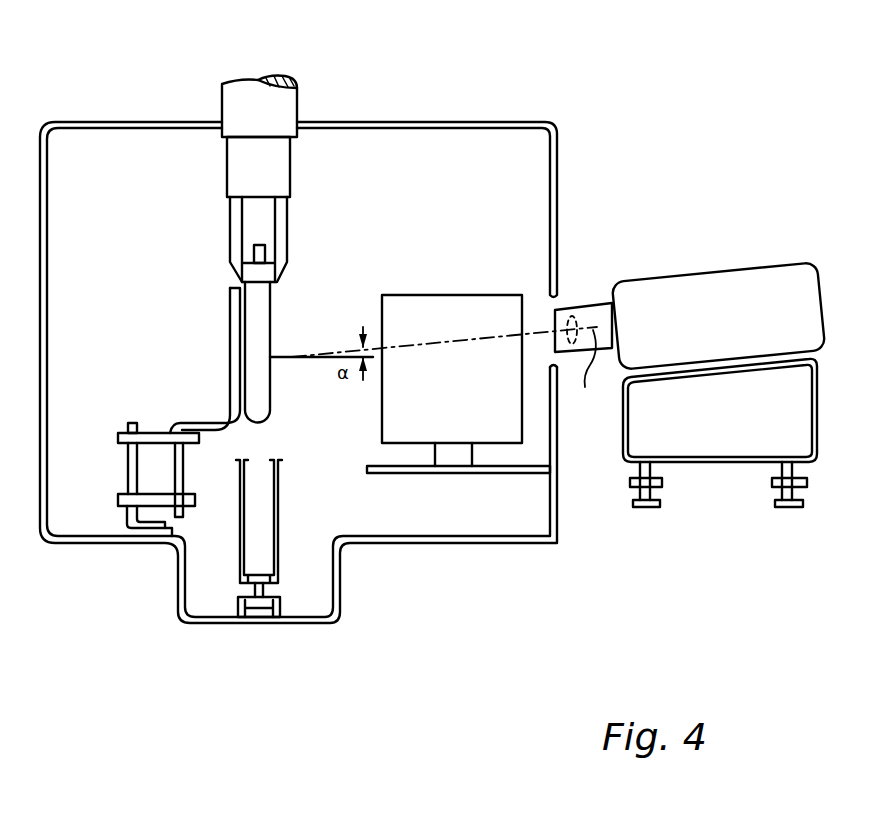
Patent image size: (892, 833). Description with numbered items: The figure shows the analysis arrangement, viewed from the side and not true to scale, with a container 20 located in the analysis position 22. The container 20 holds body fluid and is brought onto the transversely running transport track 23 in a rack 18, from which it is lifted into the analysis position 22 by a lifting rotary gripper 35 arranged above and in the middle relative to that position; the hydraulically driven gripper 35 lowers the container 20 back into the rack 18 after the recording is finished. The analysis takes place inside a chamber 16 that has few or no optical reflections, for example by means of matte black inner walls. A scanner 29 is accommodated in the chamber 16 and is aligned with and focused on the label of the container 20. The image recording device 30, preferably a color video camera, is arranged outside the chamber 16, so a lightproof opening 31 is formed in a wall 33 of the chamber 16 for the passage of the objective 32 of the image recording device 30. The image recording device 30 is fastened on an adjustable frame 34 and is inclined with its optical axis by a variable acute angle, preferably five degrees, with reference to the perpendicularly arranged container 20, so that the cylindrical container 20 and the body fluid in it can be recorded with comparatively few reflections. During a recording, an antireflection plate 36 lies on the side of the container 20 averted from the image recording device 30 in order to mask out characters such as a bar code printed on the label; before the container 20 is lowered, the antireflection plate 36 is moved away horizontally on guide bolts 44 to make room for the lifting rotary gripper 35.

The chamber 16 is at (437, 163).
The rack 18 is at (247, 558).
The container 20 is at (258, 297).
The analysis position 22 is at (225, 270).
The transport track 23 is at (280, 608).
The scanner 29 is at (410, 425).
The image recording device 30 is at (775, 302).
The lightproof opening 31 is at (558, 297).
The objective 32 is at (590, 317).
The wall 33 is at (558, 176).
The adjustable frame 34 is at (728, 462).
The lifting rotary gripper 35 is at (252, 112).
The antireflection plate 36 is at (235, 323).
The guide bolts 44 is at (155, 433).